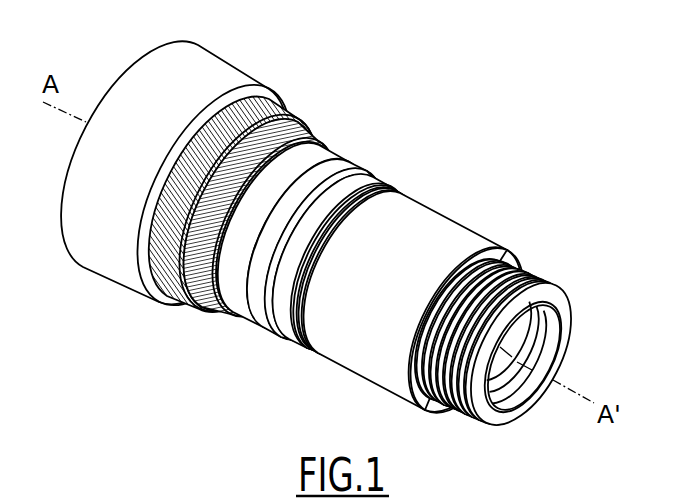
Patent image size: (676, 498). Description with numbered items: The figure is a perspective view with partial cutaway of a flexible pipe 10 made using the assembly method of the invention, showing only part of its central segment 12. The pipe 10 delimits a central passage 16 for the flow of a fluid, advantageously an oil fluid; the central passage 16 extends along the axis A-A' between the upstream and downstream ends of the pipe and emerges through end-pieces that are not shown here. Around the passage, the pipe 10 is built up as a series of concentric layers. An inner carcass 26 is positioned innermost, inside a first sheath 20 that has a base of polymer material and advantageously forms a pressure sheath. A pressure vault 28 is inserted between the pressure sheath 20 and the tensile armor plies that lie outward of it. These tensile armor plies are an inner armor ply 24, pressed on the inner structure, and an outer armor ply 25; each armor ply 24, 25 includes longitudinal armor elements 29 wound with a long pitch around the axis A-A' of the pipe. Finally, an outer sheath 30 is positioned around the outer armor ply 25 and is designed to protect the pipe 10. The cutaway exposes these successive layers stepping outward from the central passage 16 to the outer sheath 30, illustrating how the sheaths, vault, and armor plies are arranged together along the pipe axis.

The flexible pipe 10 is at (338, 223).
The central segment 12 is at (416, 254).
The central passage 16 is at (536, 350).
The first sheath 20 is at (431, 234).
The inner armor ply 24 is at (298, 122).
The outer armor ply 25 is at (270, 110).
The inner carcass 26 is at (524, 302).
The pressure vault 28 is at (345, 173).
The longitudinal armor elements 29 is at (200, 265).
The outer sheath 30 is at (213, 72).